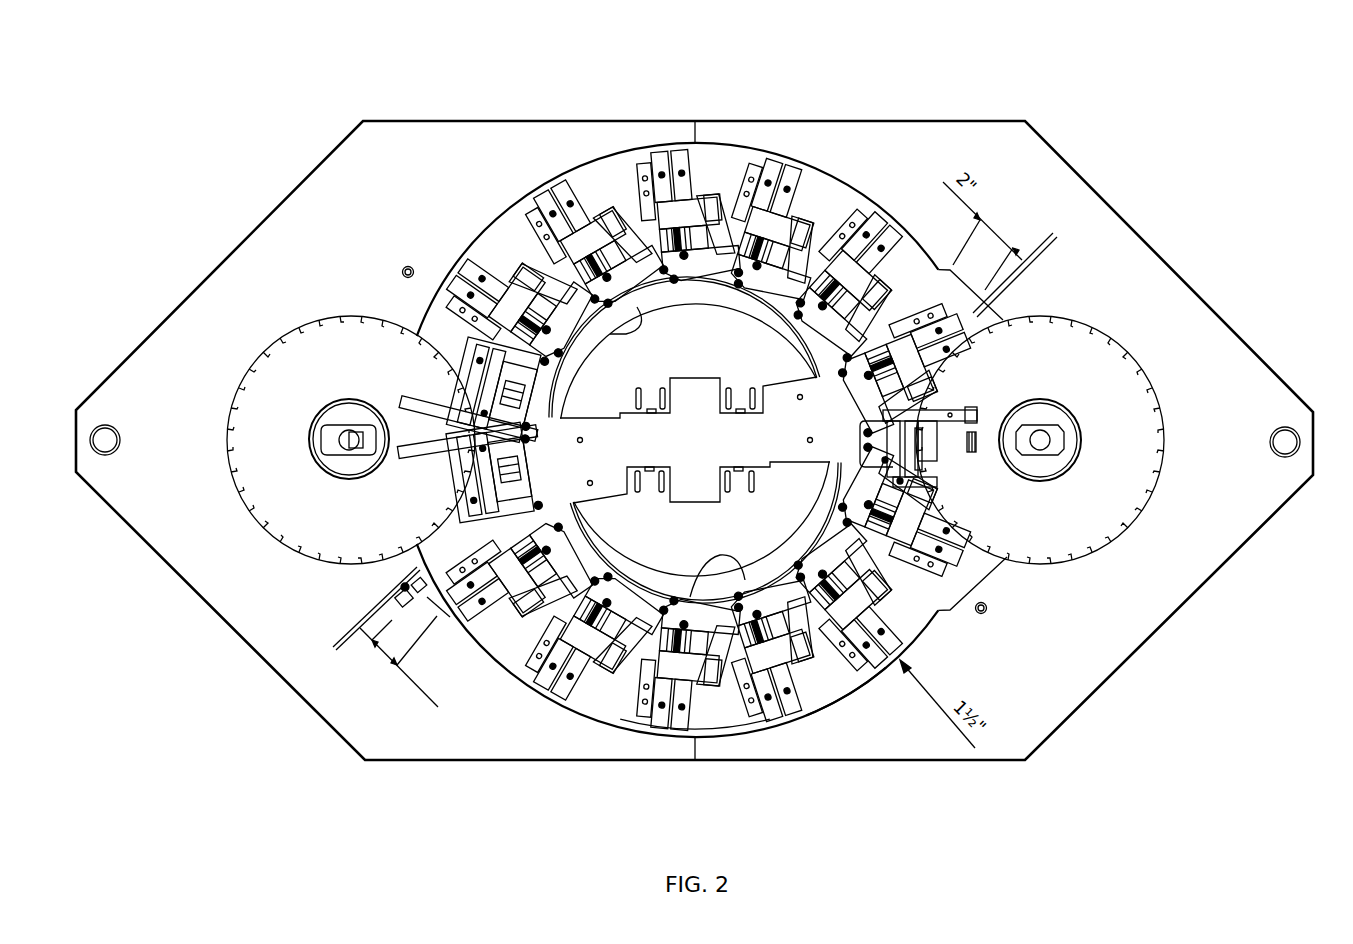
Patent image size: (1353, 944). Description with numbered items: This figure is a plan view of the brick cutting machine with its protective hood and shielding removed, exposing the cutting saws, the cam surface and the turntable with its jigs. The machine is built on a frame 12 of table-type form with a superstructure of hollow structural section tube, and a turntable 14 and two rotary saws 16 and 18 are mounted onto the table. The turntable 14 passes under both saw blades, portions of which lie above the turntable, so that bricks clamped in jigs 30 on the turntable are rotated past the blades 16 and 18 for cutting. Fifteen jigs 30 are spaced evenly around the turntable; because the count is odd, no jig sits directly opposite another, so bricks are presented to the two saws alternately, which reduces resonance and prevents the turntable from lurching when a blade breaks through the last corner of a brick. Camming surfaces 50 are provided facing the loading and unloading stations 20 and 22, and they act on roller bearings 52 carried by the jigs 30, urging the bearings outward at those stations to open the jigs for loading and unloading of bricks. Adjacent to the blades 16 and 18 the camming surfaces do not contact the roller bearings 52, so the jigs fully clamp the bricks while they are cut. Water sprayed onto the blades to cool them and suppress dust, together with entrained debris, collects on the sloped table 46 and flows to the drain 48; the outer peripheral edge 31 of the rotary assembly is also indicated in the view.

The frame 12 is at (790, 748).
The turntable 14 is at (602, 702).
The rotary saw 16 is at (1110, 418).
The rotary saw 18 is at (258, 423).
The loading station 20 is at (709, 747).
The unloading station 22 is at (750, 142).
The jig 30 is at (782, 227).
The outer peripheral edge 31 is at (852, 704).
The sloped table 46 is at (180, 486).
The drain 48 is at (102, 440).
The camming surface 50 is at (612, 336).
The roller bearing 52 is at (409, 546).